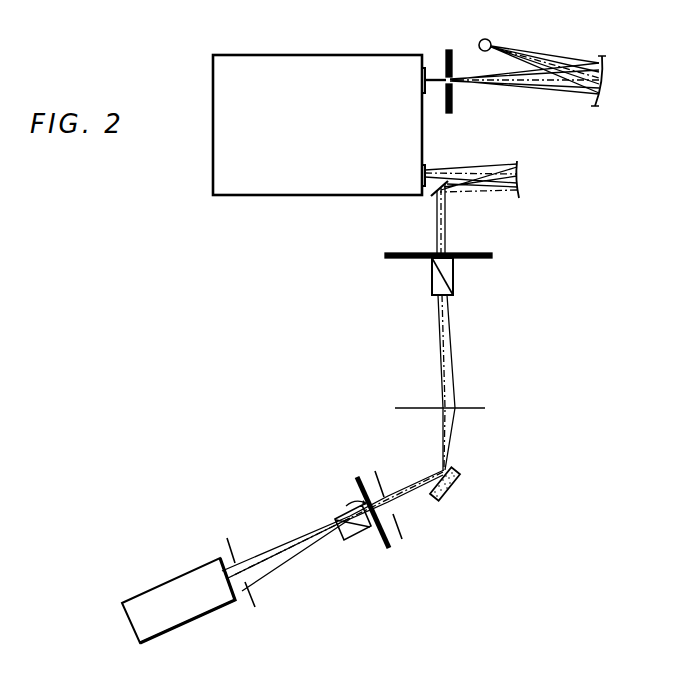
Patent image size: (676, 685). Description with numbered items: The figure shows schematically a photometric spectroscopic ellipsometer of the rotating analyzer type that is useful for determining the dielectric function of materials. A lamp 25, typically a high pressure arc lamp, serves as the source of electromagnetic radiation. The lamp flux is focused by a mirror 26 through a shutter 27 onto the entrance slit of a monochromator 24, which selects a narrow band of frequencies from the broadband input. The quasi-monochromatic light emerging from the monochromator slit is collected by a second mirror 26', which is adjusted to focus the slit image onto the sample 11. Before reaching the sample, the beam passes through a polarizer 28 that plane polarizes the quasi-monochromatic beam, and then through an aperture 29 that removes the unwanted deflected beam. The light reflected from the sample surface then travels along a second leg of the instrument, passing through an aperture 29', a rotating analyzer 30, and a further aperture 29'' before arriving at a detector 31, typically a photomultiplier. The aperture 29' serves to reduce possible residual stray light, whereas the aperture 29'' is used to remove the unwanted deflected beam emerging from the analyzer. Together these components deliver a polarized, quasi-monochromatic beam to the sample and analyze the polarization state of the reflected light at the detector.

The monochromator 24 is at (298, 55).
The lamp 25 is at (498, 27).
The mirror 26 is at (616, 81).
The second mirror 26' is at (538, 179).
The shutter 27 is at (454, 60).
The polarizer 28 is at (455, 280).
The aperture 29 is at (444, 393).
The aperture 29' is at (411, 509).
The further aperture 29'' is at (253, 561).
The sample 11 is at (459, 481).
The rotating analyzer 30 is at (363, 529).
The detector 31 is at (165, 584).